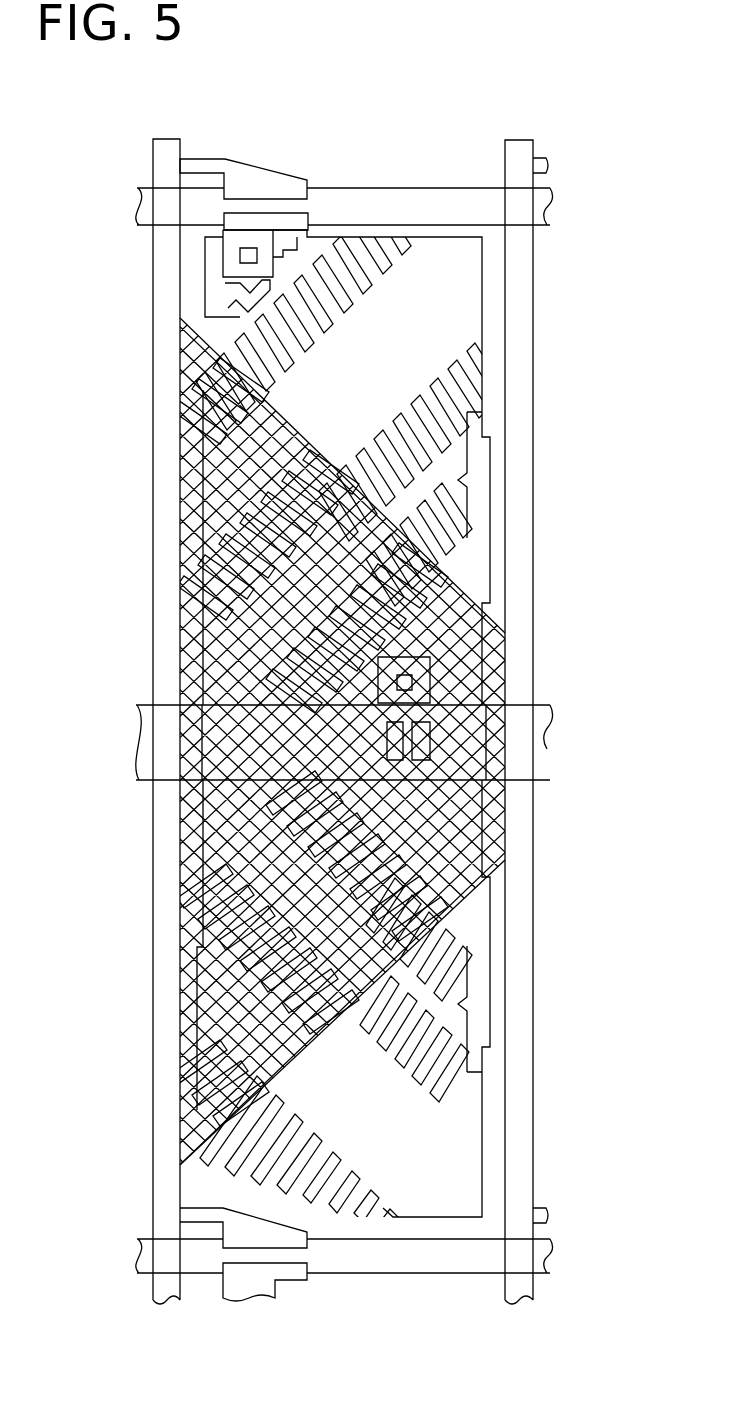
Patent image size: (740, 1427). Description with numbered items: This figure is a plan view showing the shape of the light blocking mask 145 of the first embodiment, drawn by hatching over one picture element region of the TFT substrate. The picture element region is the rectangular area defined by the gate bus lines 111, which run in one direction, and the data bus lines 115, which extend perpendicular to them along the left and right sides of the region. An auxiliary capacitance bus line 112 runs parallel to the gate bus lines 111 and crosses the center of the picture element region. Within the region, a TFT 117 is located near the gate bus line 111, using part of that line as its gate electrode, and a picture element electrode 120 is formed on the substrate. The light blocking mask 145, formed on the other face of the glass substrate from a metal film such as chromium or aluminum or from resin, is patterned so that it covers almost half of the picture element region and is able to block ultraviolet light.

The data bus line 115 is at (168, 157).
The TFT 117 is at (282, 150).
The gate bus line 111 is at (145, 203).
The picture element electrode 120 is at (455, 305).
The light blocking mask 145 is at (192, 464).
The auxiliary capacitance bus line 112 is at (140, 742).